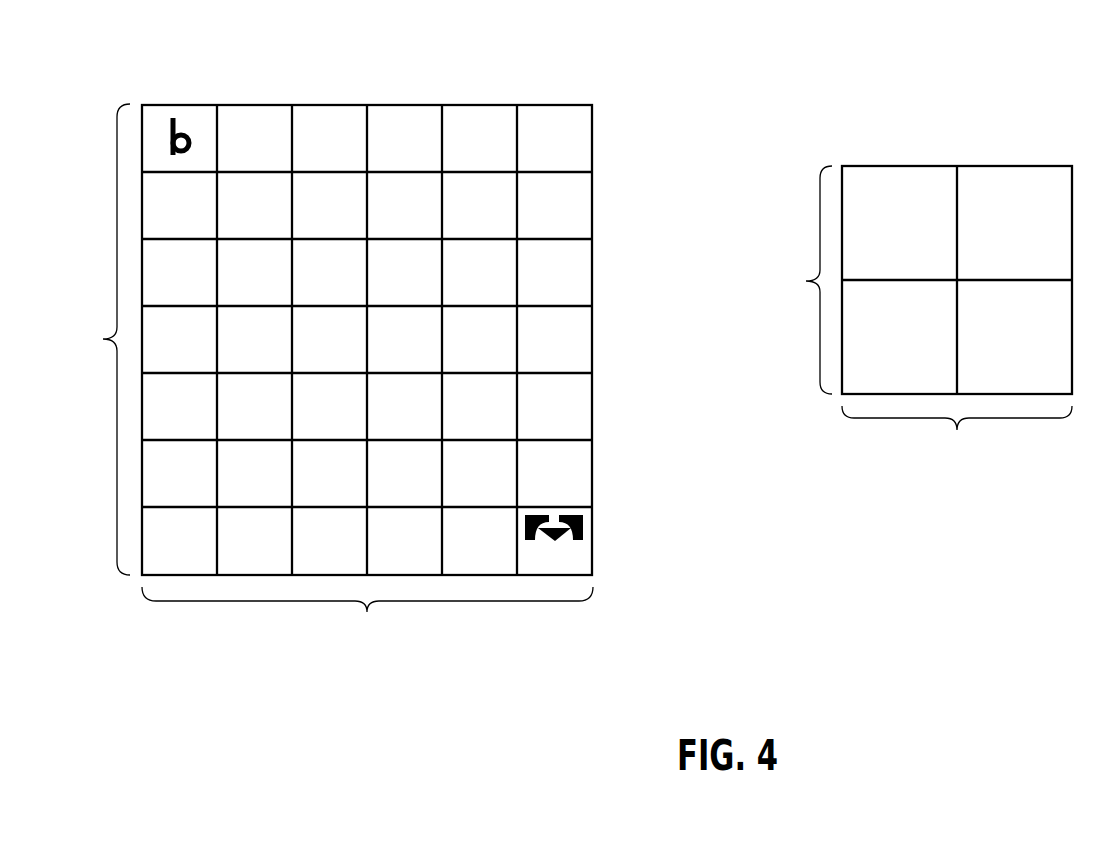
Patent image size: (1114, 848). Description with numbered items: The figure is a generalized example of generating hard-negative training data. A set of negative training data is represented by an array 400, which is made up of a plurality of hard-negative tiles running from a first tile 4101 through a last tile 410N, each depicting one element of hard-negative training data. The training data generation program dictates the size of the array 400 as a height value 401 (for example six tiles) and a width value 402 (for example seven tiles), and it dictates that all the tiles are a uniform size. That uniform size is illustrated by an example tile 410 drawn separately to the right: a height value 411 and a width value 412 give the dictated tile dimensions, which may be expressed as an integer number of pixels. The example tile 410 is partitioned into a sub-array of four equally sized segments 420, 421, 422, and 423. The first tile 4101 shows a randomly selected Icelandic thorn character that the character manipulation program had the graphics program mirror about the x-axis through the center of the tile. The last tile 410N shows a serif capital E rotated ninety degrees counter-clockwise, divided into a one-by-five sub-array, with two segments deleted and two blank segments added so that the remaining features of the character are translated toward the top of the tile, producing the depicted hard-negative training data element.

The array 400 is at (389, 72).
The height value of array 401 is at (90, 339).
The width value of array 402 is at (367, 621).
The example tile 410 is at (981, 125).
The first tile 4101 is at (187, 105).
The last tile 410N is at (593, 542).
The dictated height value of tile 411 is at (793, 280).
The dictated width value of tile 412 is at (957, 440).
The segment 420 is at (925, 238).
The segment 421 is at (1036, 238).
The segment 422 is at (925, 348).
The segment 423 is at (1037, 348).